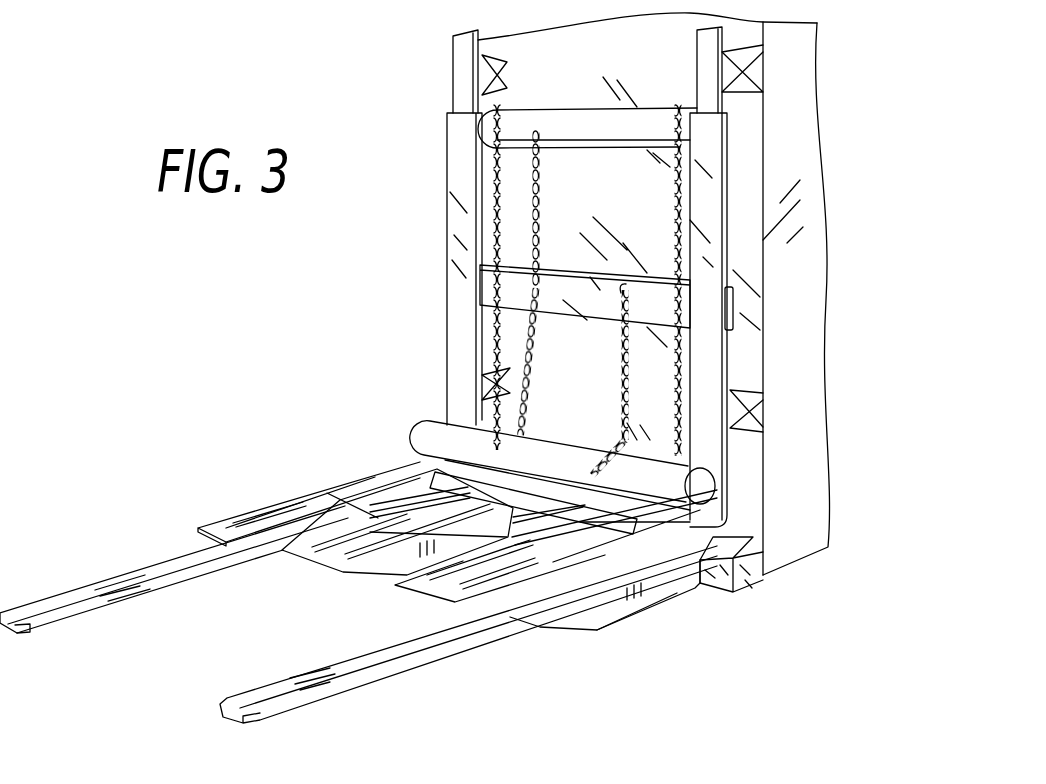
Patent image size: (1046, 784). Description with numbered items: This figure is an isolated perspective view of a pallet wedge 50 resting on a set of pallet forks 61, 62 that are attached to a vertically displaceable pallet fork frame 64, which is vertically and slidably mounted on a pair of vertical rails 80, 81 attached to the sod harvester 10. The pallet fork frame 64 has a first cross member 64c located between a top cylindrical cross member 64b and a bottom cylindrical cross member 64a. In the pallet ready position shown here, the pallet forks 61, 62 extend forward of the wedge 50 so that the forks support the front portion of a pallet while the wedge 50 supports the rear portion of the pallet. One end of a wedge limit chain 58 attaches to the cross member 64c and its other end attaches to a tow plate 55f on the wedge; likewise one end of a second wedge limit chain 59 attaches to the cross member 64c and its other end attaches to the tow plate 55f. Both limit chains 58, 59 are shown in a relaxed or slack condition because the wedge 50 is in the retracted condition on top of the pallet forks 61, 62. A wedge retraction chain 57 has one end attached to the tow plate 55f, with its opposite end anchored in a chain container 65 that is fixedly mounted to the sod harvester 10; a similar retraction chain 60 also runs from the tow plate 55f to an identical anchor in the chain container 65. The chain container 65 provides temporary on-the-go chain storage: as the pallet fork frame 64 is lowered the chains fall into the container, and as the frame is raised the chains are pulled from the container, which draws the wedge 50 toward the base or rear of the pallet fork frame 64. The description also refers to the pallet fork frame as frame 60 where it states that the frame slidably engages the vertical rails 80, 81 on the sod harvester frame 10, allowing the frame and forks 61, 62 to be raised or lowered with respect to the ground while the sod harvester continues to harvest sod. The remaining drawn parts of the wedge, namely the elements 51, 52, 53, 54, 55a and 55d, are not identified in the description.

The sod harvester 10 is at (810, 313).
The wedge 50 is at (677, 598).
The first plate 51 is at (198, 527).
The second plate 52 is at (305, 558).
The third plate 53 is at (407, 580).
The fourth plate 54 is at (573, 627).
The base portion of frame 55a is at (660, 540).
The top portion of frame 55d is at (393, 495).
The tow plate 55f is at (712, 473).
The wedge retraction chain 57 is at (687, 368).
The wedge limit chain 58 is at (625, 373).
The wedge limit chain 59 is at (505, 416).
The retraction chain 60 is at (493, 193).
The pallet fork 61 is at (380, 653).
The pallet fork 62 is at (123, 592).
The vertically displaceable pallet fork frame 64 is at (710, 197).
The bottom cylindrical cross member 64a is at (703, 492).
The top cylindrical cross member 64b is at (592, 120).
The first cross member 64c is at (657, 293).
The chain container 65 is at (760, 568).
The rail 80 is at (462, 50).
The rail 81 is at (697, 72).